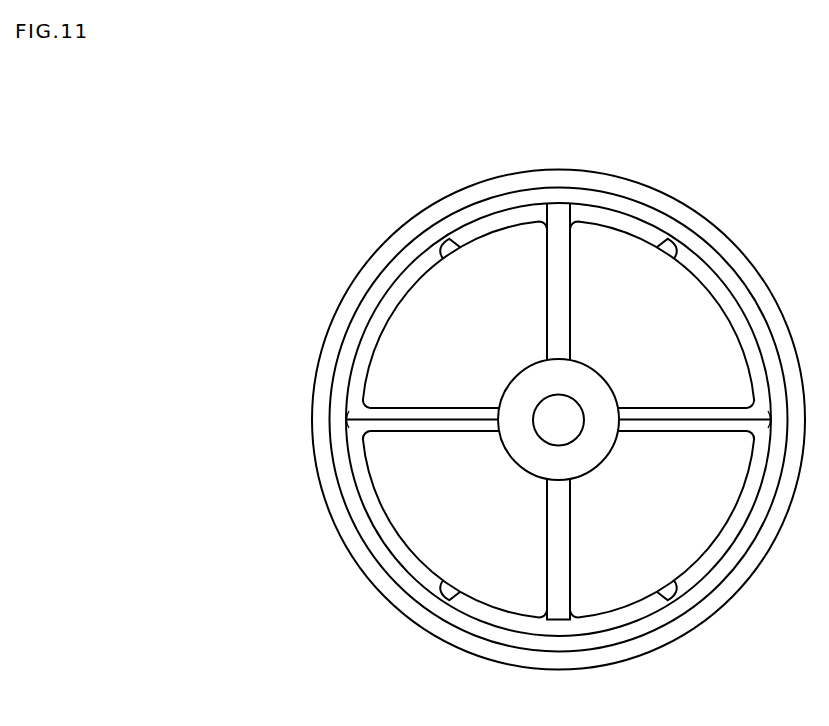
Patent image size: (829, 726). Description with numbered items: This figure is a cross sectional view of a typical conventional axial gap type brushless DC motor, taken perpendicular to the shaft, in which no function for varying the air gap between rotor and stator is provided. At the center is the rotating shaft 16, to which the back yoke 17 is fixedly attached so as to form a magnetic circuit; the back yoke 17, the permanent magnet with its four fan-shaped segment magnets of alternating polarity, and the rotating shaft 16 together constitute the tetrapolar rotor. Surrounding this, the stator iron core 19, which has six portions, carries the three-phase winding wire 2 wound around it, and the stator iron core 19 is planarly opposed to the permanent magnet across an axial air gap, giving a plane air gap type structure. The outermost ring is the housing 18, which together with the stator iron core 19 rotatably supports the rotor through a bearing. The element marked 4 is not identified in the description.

The winding wire 2 is at (563, 211).
The permanent magnet 4 is at (508, 245).
The rotating shaft 16 is at (545, 430).
The back yoke 17 is at (527, 401).
The housing 18 is at (670, 211).
The stator iron core 19 is at (412, 255).